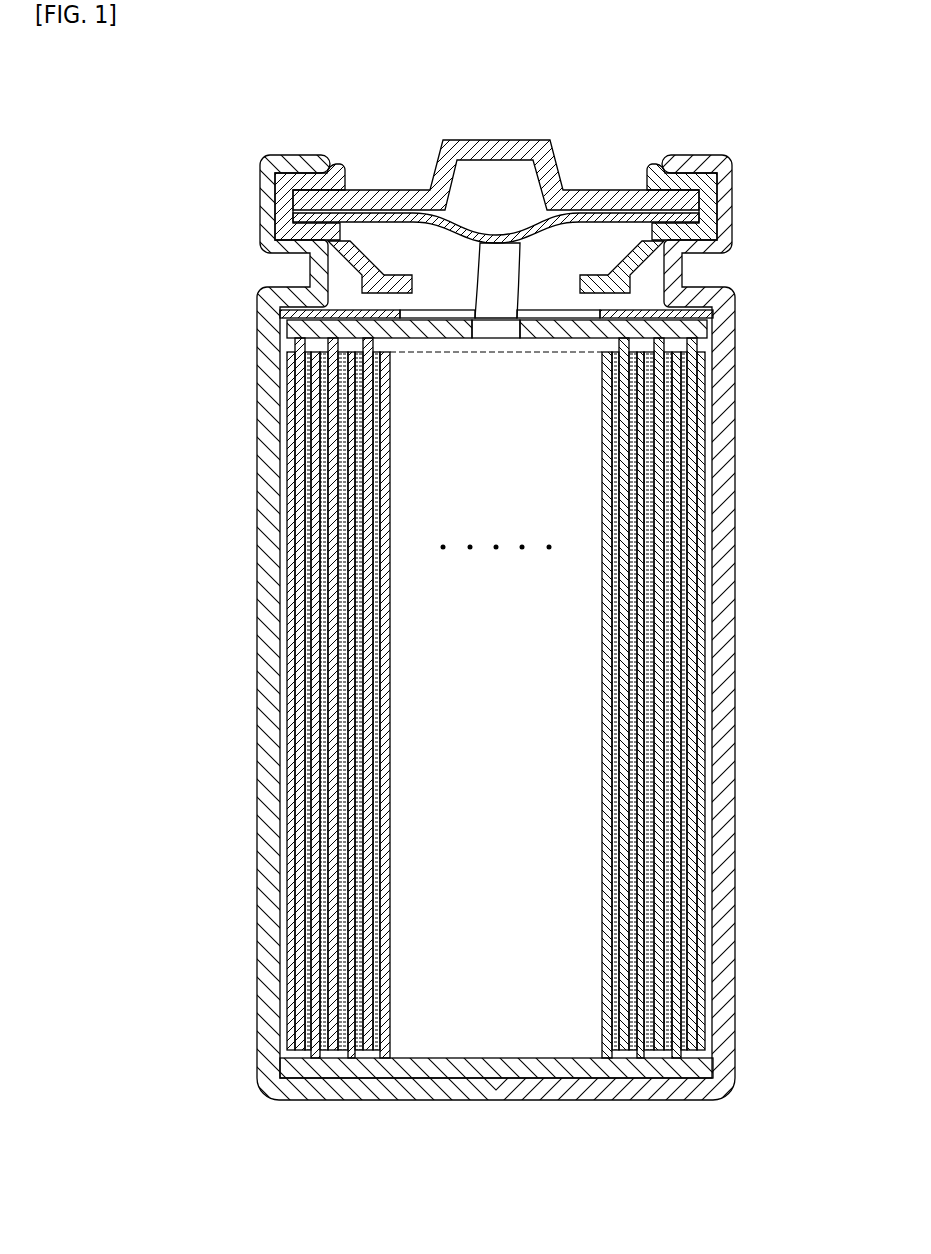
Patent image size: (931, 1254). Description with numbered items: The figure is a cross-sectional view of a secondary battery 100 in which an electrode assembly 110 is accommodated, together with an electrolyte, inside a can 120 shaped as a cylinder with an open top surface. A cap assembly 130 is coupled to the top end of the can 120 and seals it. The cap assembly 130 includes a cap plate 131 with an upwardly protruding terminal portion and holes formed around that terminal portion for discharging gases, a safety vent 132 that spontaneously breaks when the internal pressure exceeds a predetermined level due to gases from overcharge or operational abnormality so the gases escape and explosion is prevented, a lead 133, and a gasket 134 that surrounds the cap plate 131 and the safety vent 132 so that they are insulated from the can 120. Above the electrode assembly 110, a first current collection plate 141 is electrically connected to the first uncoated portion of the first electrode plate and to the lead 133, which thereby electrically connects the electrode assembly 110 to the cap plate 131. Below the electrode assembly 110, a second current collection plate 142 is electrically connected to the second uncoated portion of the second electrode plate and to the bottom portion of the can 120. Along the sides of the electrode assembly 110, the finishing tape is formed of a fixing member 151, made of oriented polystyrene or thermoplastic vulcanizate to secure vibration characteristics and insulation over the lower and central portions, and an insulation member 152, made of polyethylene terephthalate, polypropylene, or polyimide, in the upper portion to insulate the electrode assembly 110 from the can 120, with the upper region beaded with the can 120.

The secondary battery 100 is at (170, 77).
The electrode assembly 110 is at (486, 698).
The can 120 is at (725, 485).
The cap assembly 130 is at (487, 197).
The cap plate 131 is at (387, 188).
The safety vent 132 is at (347, 210).
The lead 133 is at (515, 277).
The gasket 134 is at (325, 165).
The first current collection plate 141 is at (705, 328).
The second current collection plate 142 is at (700, 1073).
The fixing member 151 is at (290, 598).
The insulation member 152 is at (290, 372).